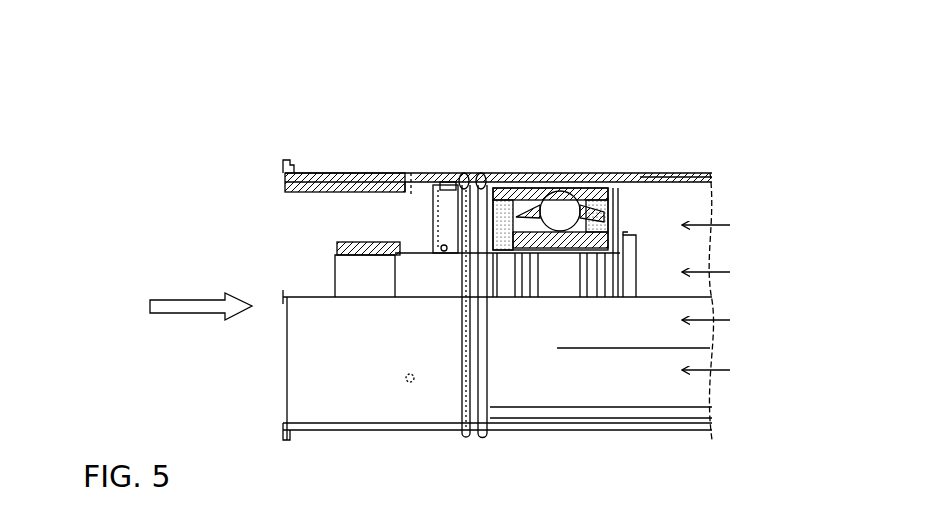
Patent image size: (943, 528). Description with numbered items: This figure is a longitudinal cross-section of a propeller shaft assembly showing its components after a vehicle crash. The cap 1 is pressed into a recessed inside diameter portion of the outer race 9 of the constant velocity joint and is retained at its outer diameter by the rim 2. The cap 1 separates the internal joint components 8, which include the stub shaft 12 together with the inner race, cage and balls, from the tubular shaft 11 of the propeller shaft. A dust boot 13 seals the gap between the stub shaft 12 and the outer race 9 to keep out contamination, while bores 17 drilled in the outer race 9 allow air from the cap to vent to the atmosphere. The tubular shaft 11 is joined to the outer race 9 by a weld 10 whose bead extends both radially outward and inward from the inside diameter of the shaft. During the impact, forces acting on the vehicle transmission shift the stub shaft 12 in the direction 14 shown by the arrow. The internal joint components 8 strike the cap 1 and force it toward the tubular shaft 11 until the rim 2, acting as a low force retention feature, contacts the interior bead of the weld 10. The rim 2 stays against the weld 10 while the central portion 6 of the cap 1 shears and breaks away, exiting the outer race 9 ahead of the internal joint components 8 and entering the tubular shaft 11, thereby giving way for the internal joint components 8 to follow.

The cap 1 is at (628, 186).
The rim 2 is at (445, 178).
The central portion 6 is at (626, 233).
The internal joint components 8 is at (557, 186).
The outer race 9 is at (372, 171).
The weld 10 is at (485, 171).
The tubular shaft 11 is at (683, 172).
The stub shaft 12 is at (428, 250).
The dust boot 13 is at (335, 245).
The direction 14 is at (178, 290).
The bores 17 is at (411, 170).